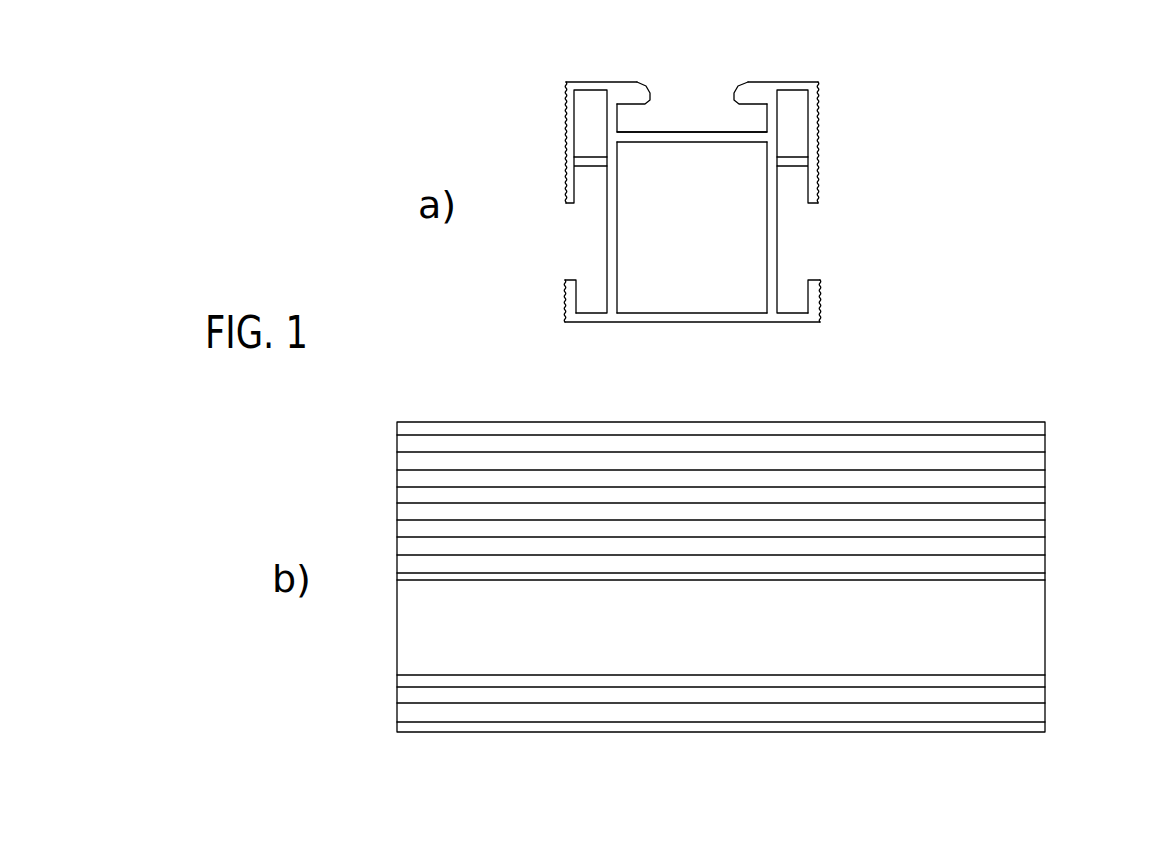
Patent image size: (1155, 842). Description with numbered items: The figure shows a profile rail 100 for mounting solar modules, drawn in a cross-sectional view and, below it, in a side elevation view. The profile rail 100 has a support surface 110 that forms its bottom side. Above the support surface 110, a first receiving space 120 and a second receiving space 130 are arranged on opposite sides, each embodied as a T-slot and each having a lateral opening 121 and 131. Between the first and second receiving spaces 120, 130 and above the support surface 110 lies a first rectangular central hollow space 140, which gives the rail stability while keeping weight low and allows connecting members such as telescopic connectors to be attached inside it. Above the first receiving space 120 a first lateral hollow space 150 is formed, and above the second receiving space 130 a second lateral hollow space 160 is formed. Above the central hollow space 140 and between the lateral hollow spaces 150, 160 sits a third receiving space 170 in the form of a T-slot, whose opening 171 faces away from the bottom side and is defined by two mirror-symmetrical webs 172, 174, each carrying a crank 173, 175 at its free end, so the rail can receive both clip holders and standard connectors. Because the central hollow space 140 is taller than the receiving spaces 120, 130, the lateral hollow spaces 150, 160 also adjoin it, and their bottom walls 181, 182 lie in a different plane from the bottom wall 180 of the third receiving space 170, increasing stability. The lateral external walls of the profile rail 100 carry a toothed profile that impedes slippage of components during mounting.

The profile rail 100 is at (882, 88).
The support surface 110 is at (747, 325).
The first receiving space 120 is at (588, 297).
The lateral opening 121 is at (580, 247).
The second receiving space 130 is at (797, 300).
The lateral opening 131 is at (805, 245).
The first rectangular central hollow space 140 is at (665, 297).
The first lateral hollow space 150 is at (587, 118).
The second lateral hollow space 160 is at (798, 125).
The third receiving space 170 is at (673, 120).
The opening 171 is at (692, 98).
The web 172 is at (780, 80).
The crank 173 is at (736, 88).
The web 174 is at (592, 80).
The crank 175 is at (645, 82).
The bottom wall 180 is at (725, 140).
The bottom wall 181 is at (802, 162).
The bottom wall 182 is at (597, 163).